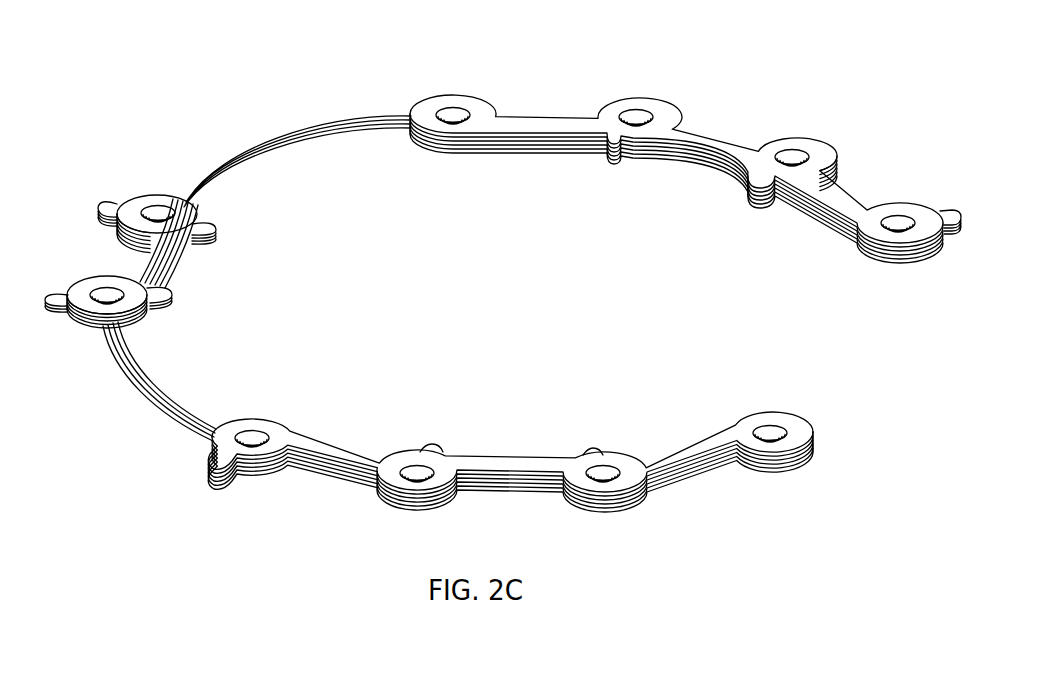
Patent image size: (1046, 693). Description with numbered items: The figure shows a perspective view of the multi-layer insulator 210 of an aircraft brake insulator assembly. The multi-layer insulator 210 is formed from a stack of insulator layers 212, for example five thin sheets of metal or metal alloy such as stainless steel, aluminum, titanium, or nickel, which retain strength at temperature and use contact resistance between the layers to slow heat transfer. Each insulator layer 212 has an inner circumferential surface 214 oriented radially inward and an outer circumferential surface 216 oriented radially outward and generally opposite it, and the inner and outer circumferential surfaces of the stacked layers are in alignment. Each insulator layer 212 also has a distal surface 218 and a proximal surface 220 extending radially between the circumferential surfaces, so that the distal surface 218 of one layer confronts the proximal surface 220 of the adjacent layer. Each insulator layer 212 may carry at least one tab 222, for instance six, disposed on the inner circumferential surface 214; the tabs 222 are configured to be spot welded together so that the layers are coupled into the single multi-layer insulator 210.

The multi-layer insulator 210 is at (188, 119).
The insulator layer 212 is at (590, 142).
The inner circumferential surface 214 is at (173, 277).
The outer circumferential surface 216 is at (137, 258).
The distal surface 218 is at (348, 470).
The proximal surface 220 is at (400, 457).
The tab 222 is at (203, 230).